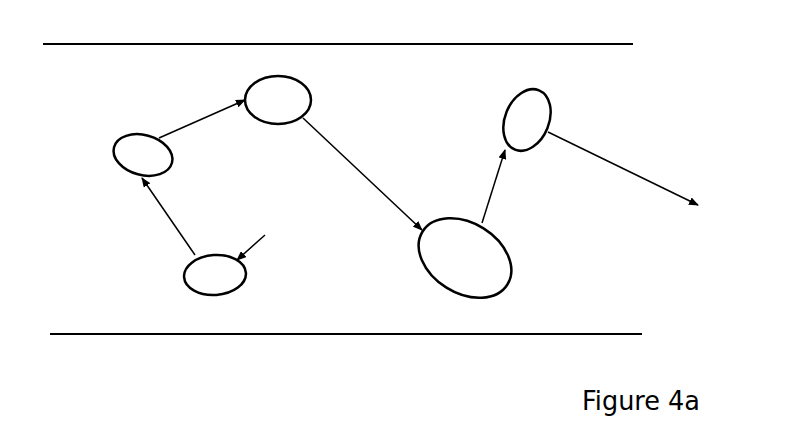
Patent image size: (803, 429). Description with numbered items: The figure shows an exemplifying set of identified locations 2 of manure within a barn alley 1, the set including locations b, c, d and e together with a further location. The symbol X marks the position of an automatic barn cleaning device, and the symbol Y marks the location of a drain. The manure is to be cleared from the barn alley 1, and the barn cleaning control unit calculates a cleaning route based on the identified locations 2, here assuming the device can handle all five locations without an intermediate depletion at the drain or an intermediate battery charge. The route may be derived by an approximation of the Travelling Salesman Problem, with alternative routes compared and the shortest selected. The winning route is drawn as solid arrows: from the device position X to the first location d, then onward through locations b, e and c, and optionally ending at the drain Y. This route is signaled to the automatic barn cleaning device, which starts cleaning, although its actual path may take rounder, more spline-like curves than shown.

The barn alley 1 is at (79, 294).
The identified locations 2 is at (125, 165).
The identified location b is at (278, 100).
The identified location c is at (527, 120).
The identified location d is at (215, 275).
The identified location e is at (465, 258).
The position of automatic barn cleaning device X is at (263, 230).
The location of drain Y is at (641, 184).